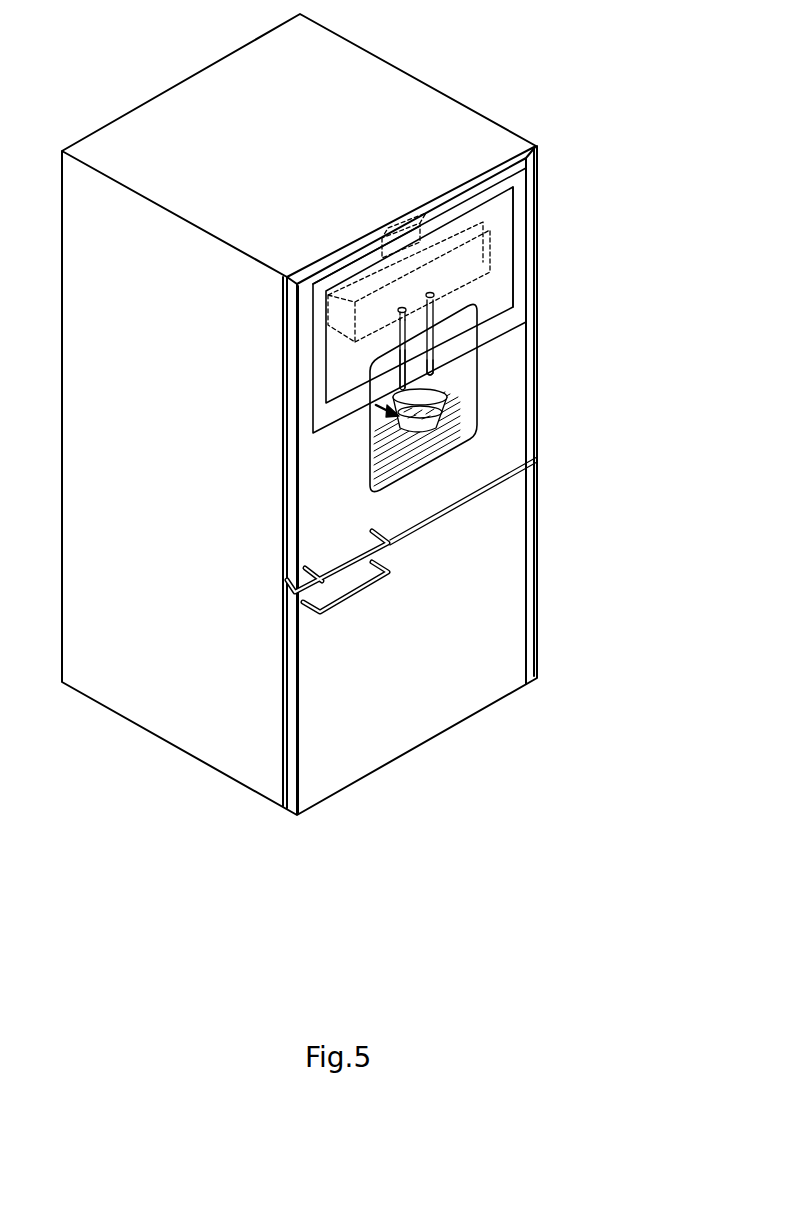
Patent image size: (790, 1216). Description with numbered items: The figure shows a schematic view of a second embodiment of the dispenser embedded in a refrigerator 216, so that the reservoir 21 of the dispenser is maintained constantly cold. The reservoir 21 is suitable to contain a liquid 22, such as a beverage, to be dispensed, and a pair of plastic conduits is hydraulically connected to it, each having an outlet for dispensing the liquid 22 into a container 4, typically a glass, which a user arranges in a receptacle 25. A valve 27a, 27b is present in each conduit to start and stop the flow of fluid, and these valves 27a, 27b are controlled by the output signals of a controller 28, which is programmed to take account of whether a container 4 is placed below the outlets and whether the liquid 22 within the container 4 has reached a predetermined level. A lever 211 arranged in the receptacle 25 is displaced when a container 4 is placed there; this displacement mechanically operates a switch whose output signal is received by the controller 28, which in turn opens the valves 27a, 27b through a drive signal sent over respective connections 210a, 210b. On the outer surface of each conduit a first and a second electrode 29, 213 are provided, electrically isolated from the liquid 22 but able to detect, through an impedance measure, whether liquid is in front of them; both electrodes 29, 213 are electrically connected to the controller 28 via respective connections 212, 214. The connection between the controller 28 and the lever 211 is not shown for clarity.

The refrigerator 216 is at (157, 128).
The controller 28 is at (404, 230).
The reservoir 21 is at (348, 294).
The electrical connection 212 is at (313, 300).
The electrical connection 210a is at (320, 325).
The electrical connection 210b is at (527, 200).
The electrical connection 214 is at (513, 235).
The liquid 22 is at (486, 263).
The first electrode 29 is at (426, 368).
The valve 27a is at (400, 385).
The valve 27b is at (440, 375).
The second electrode 213 is at (433, 355).
The lever 211 is at (375, 404).
The container 4 is at (478, 405).
The receptacle 25 is at (356, 487).